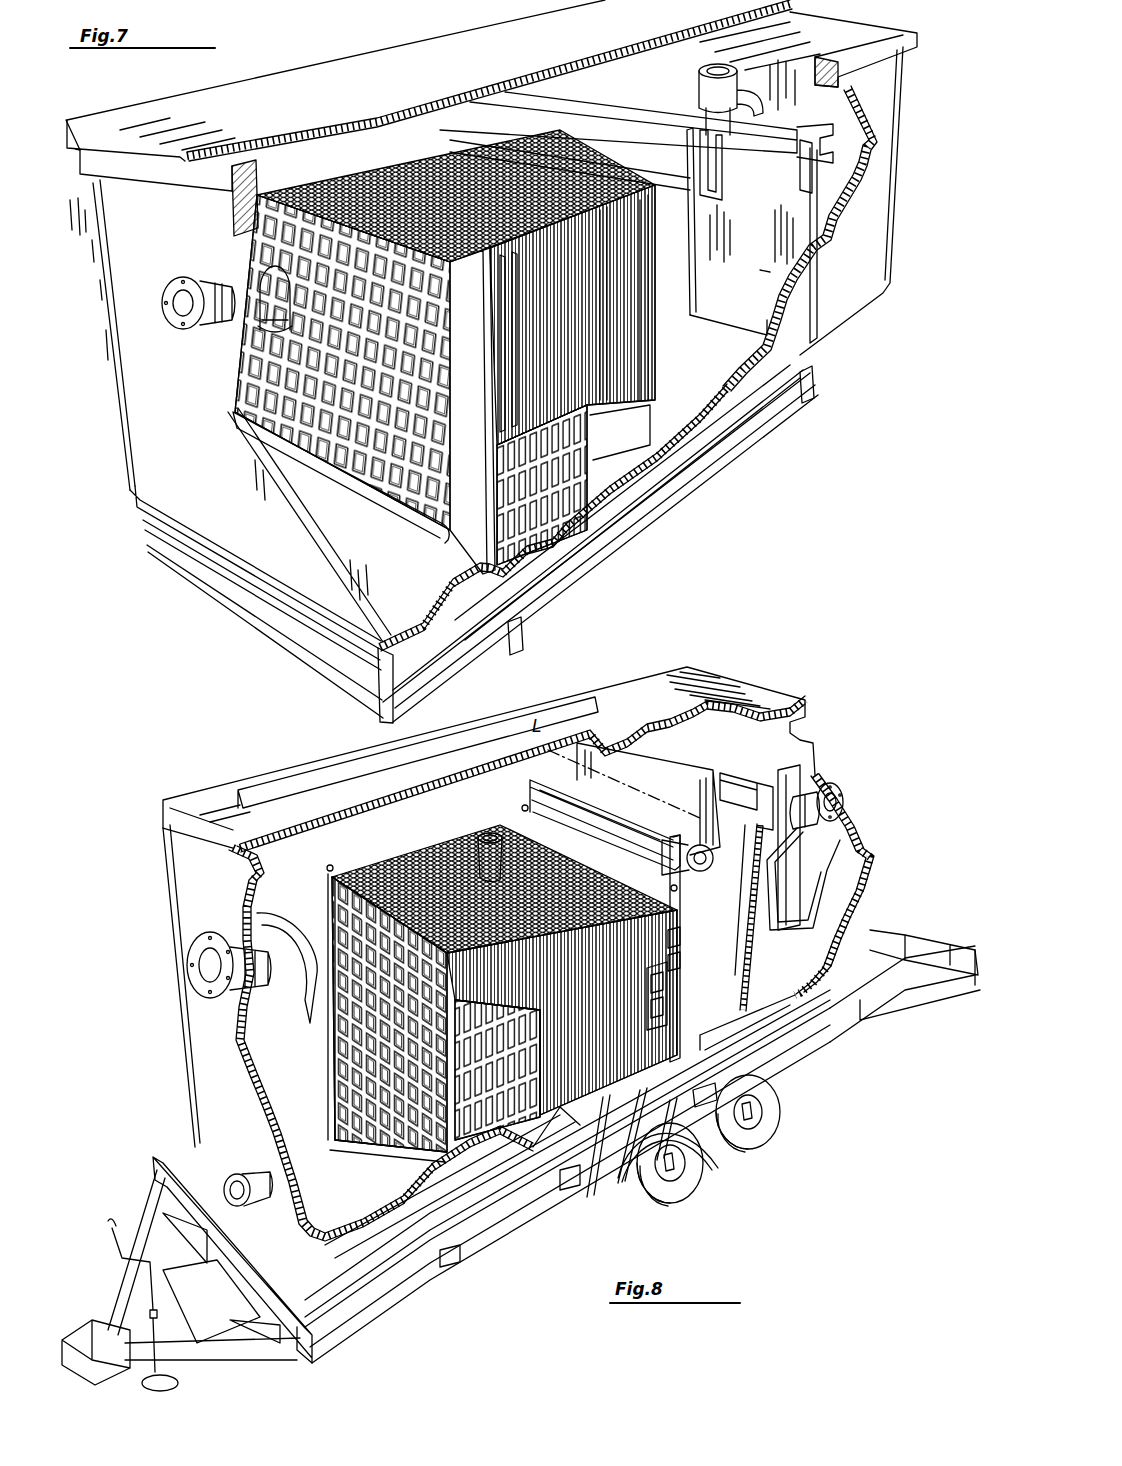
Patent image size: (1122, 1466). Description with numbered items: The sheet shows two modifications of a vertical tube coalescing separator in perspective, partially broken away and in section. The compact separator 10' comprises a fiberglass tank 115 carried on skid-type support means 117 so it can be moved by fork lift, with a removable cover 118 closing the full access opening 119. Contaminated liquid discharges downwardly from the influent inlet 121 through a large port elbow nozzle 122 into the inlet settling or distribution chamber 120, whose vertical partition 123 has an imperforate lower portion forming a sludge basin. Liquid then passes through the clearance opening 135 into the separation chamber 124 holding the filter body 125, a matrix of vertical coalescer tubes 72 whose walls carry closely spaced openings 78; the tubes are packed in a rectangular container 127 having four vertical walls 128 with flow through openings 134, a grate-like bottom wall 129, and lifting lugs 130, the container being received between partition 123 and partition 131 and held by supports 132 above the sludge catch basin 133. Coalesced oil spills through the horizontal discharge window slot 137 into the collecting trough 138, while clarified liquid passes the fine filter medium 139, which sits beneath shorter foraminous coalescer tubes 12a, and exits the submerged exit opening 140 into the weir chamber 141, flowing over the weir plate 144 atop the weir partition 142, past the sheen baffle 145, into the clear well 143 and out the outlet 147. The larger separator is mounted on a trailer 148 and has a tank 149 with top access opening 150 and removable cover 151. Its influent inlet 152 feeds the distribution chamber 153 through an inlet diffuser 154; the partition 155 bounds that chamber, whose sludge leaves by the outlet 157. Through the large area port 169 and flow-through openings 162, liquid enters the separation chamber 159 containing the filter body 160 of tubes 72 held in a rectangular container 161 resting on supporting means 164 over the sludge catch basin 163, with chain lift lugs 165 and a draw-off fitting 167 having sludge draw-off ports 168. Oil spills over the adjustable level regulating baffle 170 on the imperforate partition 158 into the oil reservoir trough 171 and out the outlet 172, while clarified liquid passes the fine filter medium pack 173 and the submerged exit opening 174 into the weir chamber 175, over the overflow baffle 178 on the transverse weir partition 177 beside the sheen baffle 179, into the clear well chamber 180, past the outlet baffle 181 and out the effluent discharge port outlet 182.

In FIG. 7, the vertical tube coalescing separator 10' is at (170, 617).
In FIG. 7, the tank 115 is at (138, 410).
In FIG. 7, the support means 117 is at (518, 650).
In FIG. 7, the removable cover 118 is at (153, 104).
In FIG. 7, the access opening 119 is at (235, 165).
In FIG. 7, the inlet settling or distribution chamber 120 is at (462, 600).
In FIG. 7, the influent inlet 121 is at (208, 270).
In FIG. 7, the large port elbow nozzle 122 is at (262, 312).
In FIG. 7, the vertical partition 123 is at (395, 552).
In FIG. 7, the maximum separation chamber 124 is at (265, 153).
In FIG. 7, the filter body 125 is at (655, 268).
In FIG. 7, the rectangular container 127 is at (385, 490).
In FIG. 7, the vertical walls 128 is at (300, 150).
In FIG. 7, the bottom wall 129 is at (605, 440).
In FIG. 7, the lifting lug 130 is at (432, 117).
In FIG. 7, the partition 131 is at (696, 282).
In FIG. 7, the supports 132 is at (660, 452).
In FIG. 7, the sludge catch basin 133 is at (583, 515).
In FIG. 7, the flow through openings 134 is at (445, 440).
In FIG. 7, the clearance opening 135 is at (300, 446).
In FIG. 7, the horizontal discharge window slot 137 is at (565, 148).
In FIG. 7, the collecting trough 138 is at (730, 165).
In FIG. 7, the fine filter medium 139 is at (672, 386).
In FIG. 7, the submerged exit opening 140 is at (700, 318).
In FIG. 7, the weir chamber 141 is at (775, 270).
In FIG. 7, the weir partition 142 is at (797, 227).
In FIG. 7, the clarified liquid chamber or clear well 143 is at (644, 72).
In FIG. 7, the vertically adjustable weir plate 144 is at (823, 128).
In FIG. 7, the sheen baffle 145 is at (795, 150).
In FIG. 7, the outlet 147 is at (742, 95).
In FIG. 7, the shorter foraminous coalescer tubes 12a is at (660, 242).
In FIG. 7, the openings 78 is at (515, 300).
In FIG. 7, the tube 72 is at (545, 348).
In FIG. 8, the tube 72 is at (612, 898).
In FIG. 8, the trailer 148 is at (560, 1165).
In FIG. 8, the tank 149 is at (190, 1095).
In FIG. 8, the top access opening 150 is at (315, 810).
In FIG. 8, the removable cover 151 is at (343, 775).
In FIG. 8, the influent inlet 152 is at (240, 950).
In FIG. 8, the receiving, settling, distribution chamber 153 is at (418, 1160).
In FIG. 8, the inlet diffuser 154 is at (292, 915).
In FIG. 8, the partition 155 is at (370, 1150).
In FIG. 8, the outlet 157 is at (252, 1172).
In FIG. 8, the imperforate partition 158 is at (690, 907).
In FIG. 8, the separation chamber 159 is at (455, 820).
In FIG. 8, the filter body 160 is at (657, 1204).
In FIG. 8, the rectangular container 161 is at (338, 872).
In FIG. 8, the flow-through openings 162 is at (333, 1043).
In FIG. 8, the sludge catch basin 163 is at (548, 1150).
In FIG. 8, the supporting means 164 is at (690, 1147).
In FIG. 8, the chain lift lugs 165 is at (332, 866).
In FIG. 8, the draw-off fitting 167 is at (470, 860).
In FIG. 8, the sludge draw-off ports 168 is at (590, 1183).
In FIG. 8, the large area port 169 is at (345, 1128).
In FIG. 8, the adjustable level regulating baffle 170 is at (590, 810).
In FIG. 8, the oil reservoir trough 171 is at (660, 816).
In FIG. 8, the outlet 172 is at (705, 868).
In FIG. 8, the fine filter medium pack 173 is at (680, 938).
In FIG. 8, the submerged exit opening 174 is at (680, 980).
In FIG. 8, the weir chamber 175 is at (748, 1001).
In FIG. 8, the transverse weir partition 177 is at (740, 950).
In FIG. 8, the vertically adjustable overflow baffle 178 is at (752, 785).
In FIG. 8, the sheen baffle 179 is at (735, 770).
In FIG. 8, the clear well chamber 180 is at (795, 975).
In FIG. 8, the outlet baffle 181 is at (832, 837).
In FIG. 8, the effluent discharge port outlet 182 is at (832, 790).